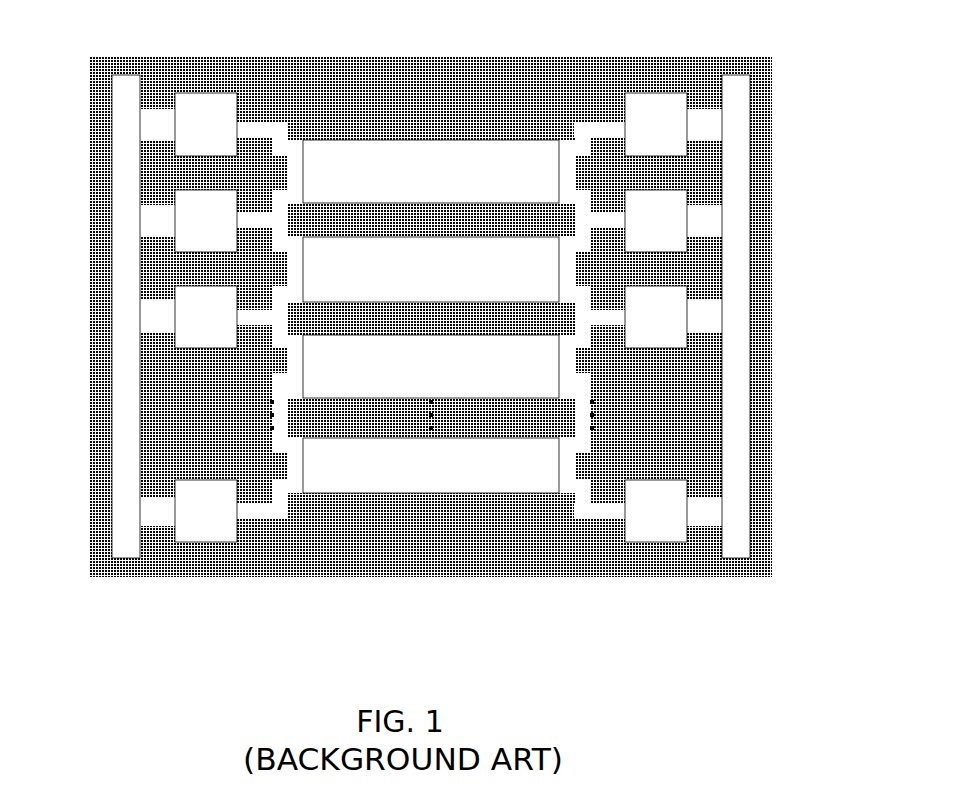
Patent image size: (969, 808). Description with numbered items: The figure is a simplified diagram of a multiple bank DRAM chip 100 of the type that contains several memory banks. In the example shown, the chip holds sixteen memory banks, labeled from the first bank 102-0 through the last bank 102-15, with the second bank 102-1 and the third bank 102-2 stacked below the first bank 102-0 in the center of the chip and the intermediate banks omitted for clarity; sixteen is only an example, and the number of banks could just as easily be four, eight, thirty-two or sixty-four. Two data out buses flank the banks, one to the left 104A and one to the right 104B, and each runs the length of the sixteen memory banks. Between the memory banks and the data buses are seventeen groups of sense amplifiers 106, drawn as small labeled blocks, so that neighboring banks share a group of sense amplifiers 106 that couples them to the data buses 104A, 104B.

The multiple bank DRAM chip 100 is at (649, 649).
The Bank 0 102-0 is at (537, 183).
The Bank 1 102-1 is at (537, 281).
The Bank 2 102-2 is at (537, 378).
The Bank 15 102-15 is at (550, 477).
The left data bus 104A is at (110, 204).
The right data bus 104B is at (752, 123).
The groups of sense amplifiers 106 is at (205, 92).